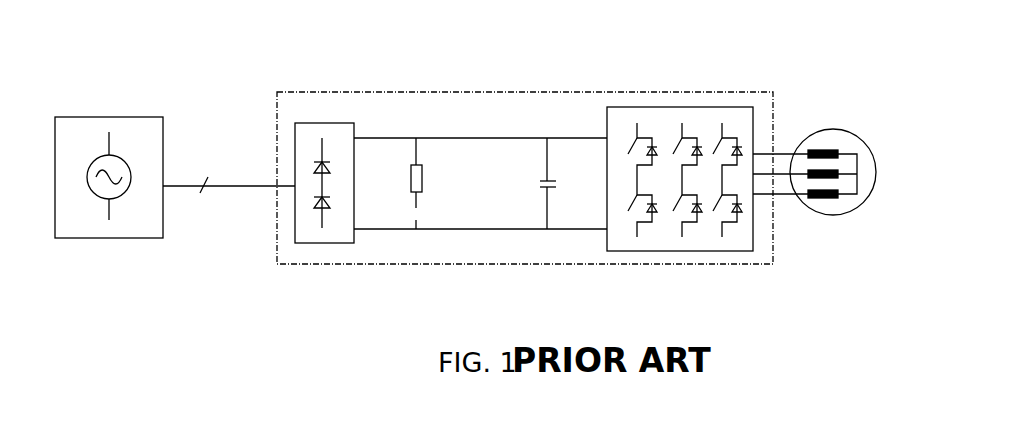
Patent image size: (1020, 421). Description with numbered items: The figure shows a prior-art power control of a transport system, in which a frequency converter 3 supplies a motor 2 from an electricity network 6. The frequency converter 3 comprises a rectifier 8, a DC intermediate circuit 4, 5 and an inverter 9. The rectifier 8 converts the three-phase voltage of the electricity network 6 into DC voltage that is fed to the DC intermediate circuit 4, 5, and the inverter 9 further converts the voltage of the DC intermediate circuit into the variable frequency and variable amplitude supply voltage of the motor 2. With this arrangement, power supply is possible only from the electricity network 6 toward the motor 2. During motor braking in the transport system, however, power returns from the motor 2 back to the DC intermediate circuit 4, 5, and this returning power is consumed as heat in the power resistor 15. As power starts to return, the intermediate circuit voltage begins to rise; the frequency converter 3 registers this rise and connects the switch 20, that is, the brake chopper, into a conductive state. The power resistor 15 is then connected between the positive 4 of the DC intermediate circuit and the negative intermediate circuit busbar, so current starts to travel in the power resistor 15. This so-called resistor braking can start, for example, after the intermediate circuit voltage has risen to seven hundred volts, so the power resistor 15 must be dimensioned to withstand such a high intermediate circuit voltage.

The motor 2 is at (825, 129).
The frequency converter 3 is at (452, 30).
The DC intermediate circuit 4 is at (447, 138).
The DC intermediate circuit 5 is at (563, 230).
The electricity network 6 is at (102, 117).
The rectifier 8 is at (313, 123).
The inverter 9 is at (672, 107).
The power resistor 15 is at (422, 175).
The switch 20 is at (413, 208).